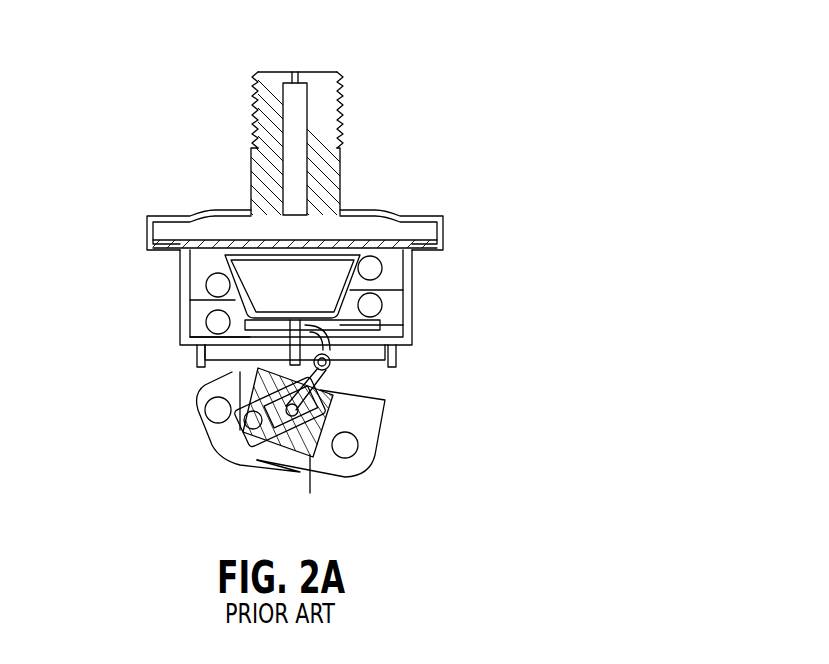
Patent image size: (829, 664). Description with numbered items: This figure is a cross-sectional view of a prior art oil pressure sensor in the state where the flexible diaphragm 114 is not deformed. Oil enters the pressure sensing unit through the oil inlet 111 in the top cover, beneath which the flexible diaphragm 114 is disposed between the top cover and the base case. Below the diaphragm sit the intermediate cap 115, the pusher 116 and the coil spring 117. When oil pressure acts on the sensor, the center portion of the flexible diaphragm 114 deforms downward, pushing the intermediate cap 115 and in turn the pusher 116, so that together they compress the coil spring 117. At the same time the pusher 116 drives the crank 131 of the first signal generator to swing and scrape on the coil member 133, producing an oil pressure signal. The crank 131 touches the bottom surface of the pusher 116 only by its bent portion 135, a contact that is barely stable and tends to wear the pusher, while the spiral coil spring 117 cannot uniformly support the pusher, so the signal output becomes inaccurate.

The oil inlet 111 is at (300, 72).
The flexible diaphragm 114 is at (385, 242).
The intermediate cap 115 is at (400, 266).
The pusher 116 is at (357, 284).
The coil spring 117 is at (215, 285).
The crank 131 is at (332, 384).
The coil member 133 is at (372, 430).
The bent portion 135 is at (295, 325).